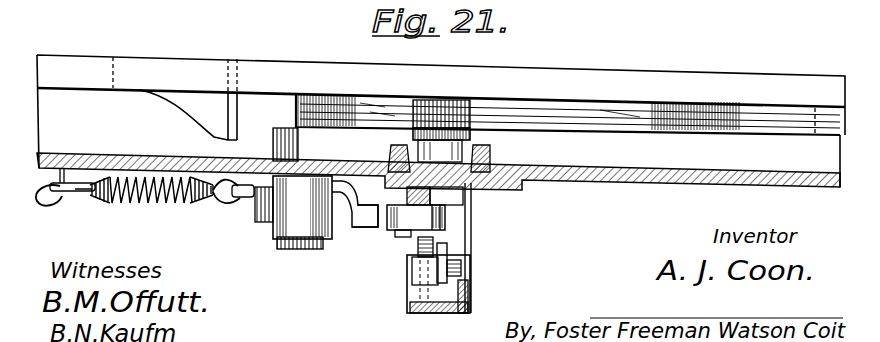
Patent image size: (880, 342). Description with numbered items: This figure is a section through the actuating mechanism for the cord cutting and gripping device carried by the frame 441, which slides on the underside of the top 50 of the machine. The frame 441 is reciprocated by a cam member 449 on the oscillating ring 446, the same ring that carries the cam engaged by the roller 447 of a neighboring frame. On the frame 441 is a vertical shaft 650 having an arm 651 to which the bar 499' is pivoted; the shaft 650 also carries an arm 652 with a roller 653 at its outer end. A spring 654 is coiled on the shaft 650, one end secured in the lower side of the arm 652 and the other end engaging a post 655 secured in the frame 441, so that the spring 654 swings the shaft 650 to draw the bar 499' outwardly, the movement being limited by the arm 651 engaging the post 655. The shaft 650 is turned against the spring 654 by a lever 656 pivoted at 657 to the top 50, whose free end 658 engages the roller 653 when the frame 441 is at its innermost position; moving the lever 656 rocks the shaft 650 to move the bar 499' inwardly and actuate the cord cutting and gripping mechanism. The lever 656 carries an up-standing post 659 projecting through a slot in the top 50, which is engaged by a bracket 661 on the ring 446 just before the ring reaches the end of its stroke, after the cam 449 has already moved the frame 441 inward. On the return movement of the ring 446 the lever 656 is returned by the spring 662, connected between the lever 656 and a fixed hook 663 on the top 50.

The ring 446 is at (178, 68).
The bracket 661 is at (233, 126).
The roller 447 is at (472, 107).
The top 50 is at (641, 171).
The cam member 449 is at (572, 121).
The frame 441 is at (491, 166).
The up-standing post 659 is at (296, 152).
The lever 656 is at (268, 222).
The pivot 657 is at (300, 249).
The roller 653 is at (378, 222).
The free end 658 is at (349, 220).
The arm 652 is at (444, 214).
The post 655 is at (440, 245).
The spring 654 is at (422, 245).
The vertical shaft 650 is at (410, 264).
The arm 651 is at (448, 263).
The bar 499' is at (493, 271).
The fixed hook 663 is at (53, 203).
The spring 662 is at (150, 201).